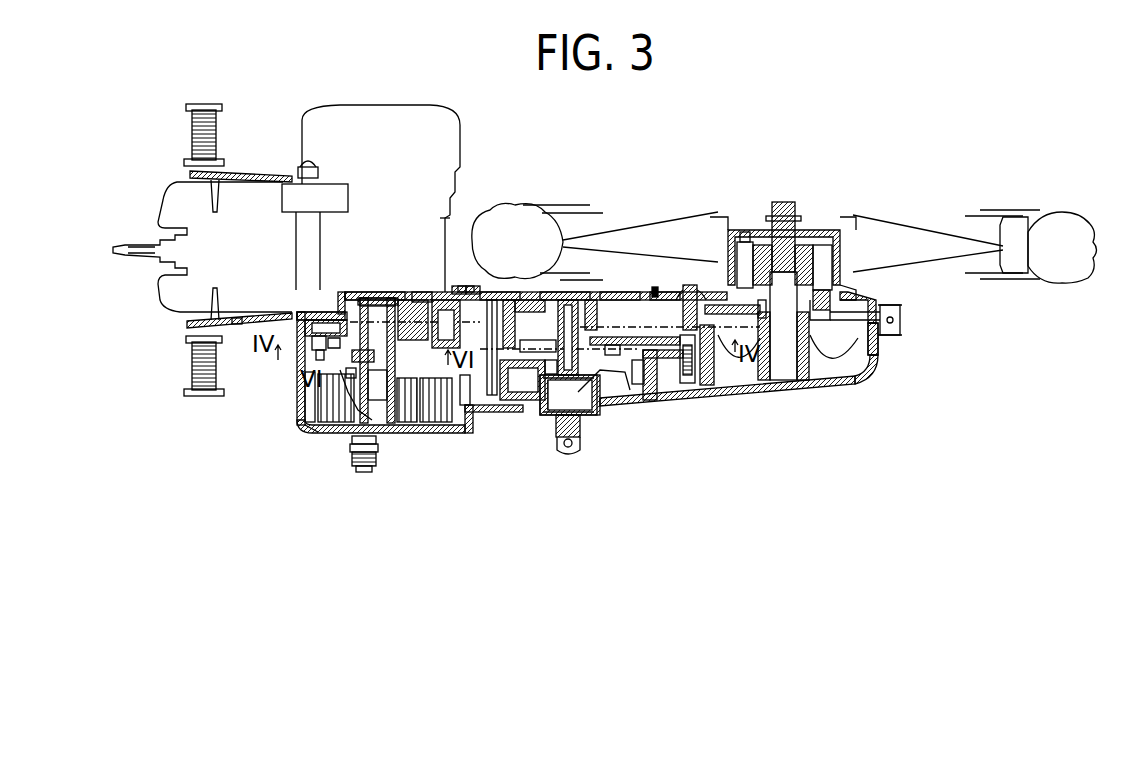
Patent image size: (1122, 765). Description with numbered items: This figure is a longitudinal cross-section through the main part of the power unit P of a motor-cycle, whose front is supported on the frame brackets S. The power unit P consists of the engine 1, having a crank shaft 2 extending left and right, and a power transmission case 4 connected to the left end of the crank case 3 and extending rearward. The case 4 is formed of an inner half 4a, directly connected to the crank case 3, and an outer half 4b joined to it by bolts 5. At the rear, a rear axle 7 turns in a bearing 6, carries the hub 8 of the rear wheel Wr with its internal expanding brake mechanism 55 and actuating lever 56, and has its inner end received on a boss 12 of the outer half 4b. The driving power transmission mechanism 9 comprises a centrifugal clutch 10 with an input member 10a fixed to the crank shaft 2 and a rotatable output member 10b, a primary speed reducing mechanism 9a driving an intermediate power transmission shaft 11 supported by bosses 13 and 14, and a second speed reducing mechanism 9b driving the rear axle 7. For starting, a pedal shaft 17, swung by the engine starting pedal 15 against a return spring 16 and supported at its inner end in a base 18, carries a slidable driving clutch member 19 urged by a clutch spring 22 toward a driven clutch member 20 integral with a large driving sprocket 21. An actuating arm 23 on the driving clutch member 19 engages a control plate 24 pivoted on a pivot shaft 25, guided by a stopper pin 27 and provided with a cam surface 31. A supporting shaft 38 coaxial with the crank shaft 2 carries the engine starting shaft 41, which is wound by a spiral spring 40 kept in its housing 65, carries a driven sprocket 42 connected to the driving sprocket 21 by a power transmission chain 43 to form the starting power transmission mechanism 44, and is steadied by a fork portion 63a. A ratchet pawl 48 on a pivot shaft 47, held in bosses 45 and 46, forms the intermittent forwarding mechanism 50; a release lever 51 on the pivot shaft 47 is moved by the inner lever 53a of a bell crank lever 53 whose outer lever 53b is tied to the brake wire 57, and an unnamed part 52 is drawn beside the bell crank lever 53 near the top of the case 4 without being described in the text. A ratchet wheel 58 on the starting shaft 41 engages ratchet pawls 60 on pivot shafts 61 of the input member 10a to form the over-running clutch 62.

The motor-cycle engine 1 is at (170, 286).
The supporting bracket S is at (300, 180).
The power unit P is at (469, 167).
The rear wheel Wr is at (524, 207).
The crank shaft 2 is at (376, 298).
The crank case 3 is at (444, 218).
The power transmission case 4 is at (657, 292).
The inner half of the case 4a is at (612, 292).
The outer half of the case 4b is at (668, 398).
The bolt 5 is at (876, 348).
The bearing 6 is at (768, 246).
The rear axle 7 is at (798, 303).
The hub 8 is at (718, 212).
The driving power transmission mechanism 9 is at (346, 300).
The primary speed reducing mechanism 9a is at (421, 289).
The second speed reducing mechanism 9b is at (672, 331).
The centrifugal clutch 10 is at (300, 312).
The input member 10a is at (312, 346).
The output member 10b is at (418, 300).
The intermediate power transmission shaft 11 is at (690, 285).
The boss 12 is at (800, 380).
The boss 13 is at (676, 300).
The boss 14 is at (710, 365).
The engine starting pedal 15 is at (355, 464).
The return spring 16 is at (585, 398).
The pedal shaft 17 is at (567, 425).
The base 18 is at (592, 300).
The driving clutch member 19 is at (550, 345).
The driven clutch member 20 is at (545, 372).
The driving sprocket 21 is at (540, 382).
The clutch spring 22 is at (553, 290).
The actuating arm 23 is at (598, 345).
The control plate 24 is at (655, 280).
The pivot shaft 25 is at (690, 365).
The stopper pin 27 is at (640, 385).
The cam surface 31 is at (612, 346).
The supporting shaft 38 is at (378, 445).
The spiral spring 40 is at (318, 412).
The engine starting shaft 41 is at (345, 418).
The driven sprocket 42 is at (348, 374).
The power transmission chain 43 is at (355, 357).
The starting power transmission mechanism 44 is at (604, 372).
The boss 45 is at (506, 326).
The boss 46 is at (470, 385).
The pivot shaft 47 is at (492, 340).
The ratchet pawl 48 is at (522, 362).
The intermittent forwarding mechanism 50 is at (510, 380).
The release lever 51 is at (518, 340).
The bolt 52 is at (464, 288).
The bell crank lever 53 is at (475, 290).
The inner lever 53a is at (500, 300).
The outer lever 53b is at (460, 288).
The brake mechanism 55 is at (818, 250).
The actuating lever 56 is at (870, 305).
The brake wire 57 is at (892, 318).
The ratchet wheel 58 is at (348, 322).
The ratchet pawl 60 is at (440, 392).
The pivot shaft 61 is at (440, 345).
The over-running clutch 62 is at (400, 392).
The fork portion 63a is at (385, 425).
The housing 65 is at (320, 432).